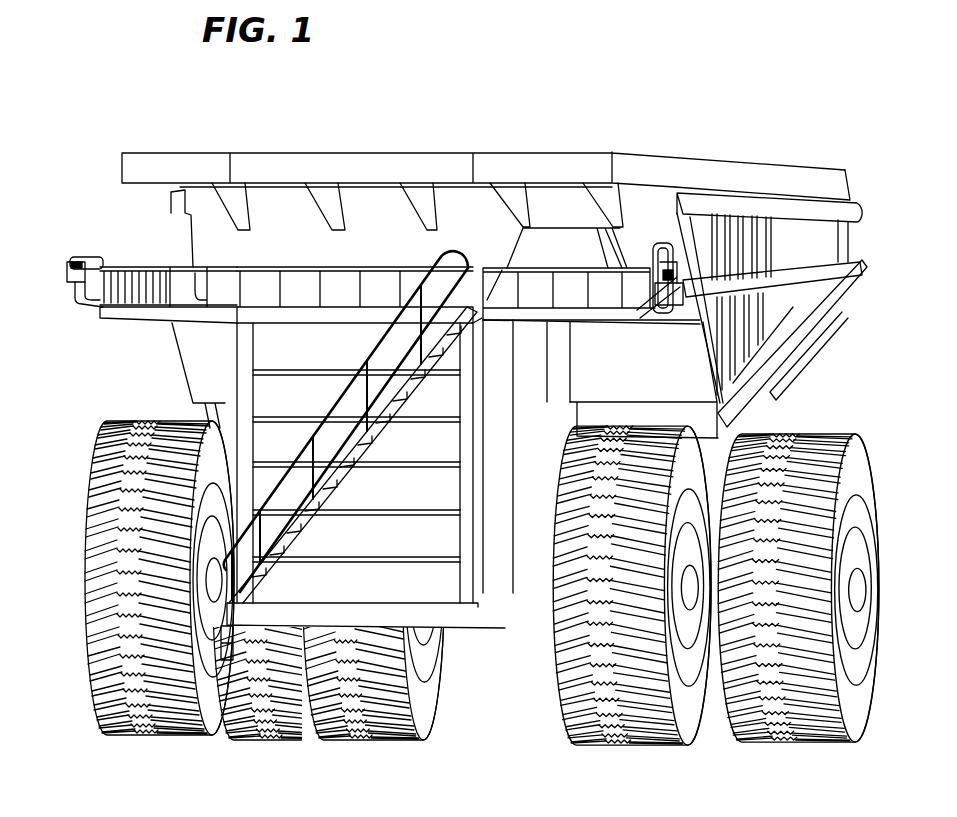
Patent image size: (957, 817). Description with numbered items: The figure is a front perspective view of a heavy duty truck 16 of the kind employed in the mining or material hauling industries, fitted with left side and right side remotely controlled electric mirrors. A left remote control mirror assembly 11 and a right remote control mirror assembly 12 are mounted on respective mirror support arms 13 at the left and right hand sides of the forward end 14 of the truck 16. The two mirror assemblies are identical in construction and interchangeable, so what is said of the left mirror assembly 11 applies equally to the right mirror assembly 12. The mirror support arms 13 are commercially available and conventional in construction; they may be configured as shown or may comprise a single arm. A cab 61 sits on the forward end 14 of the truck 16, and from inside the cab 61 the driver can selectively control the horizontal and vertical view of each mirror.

The heavy duty truck 16 is at (463, 137).
The cab 61 is at (573, 237).
The left remote control mirror assembly 11 is at (660, 233).
The right remote control mirror assembly 12 is at (88, 251).
The mirror support arms 13 is at (95, 306).
The forward end 14 is at (145, 316).